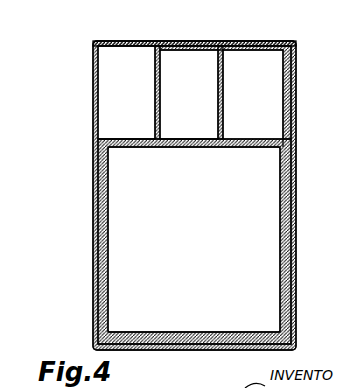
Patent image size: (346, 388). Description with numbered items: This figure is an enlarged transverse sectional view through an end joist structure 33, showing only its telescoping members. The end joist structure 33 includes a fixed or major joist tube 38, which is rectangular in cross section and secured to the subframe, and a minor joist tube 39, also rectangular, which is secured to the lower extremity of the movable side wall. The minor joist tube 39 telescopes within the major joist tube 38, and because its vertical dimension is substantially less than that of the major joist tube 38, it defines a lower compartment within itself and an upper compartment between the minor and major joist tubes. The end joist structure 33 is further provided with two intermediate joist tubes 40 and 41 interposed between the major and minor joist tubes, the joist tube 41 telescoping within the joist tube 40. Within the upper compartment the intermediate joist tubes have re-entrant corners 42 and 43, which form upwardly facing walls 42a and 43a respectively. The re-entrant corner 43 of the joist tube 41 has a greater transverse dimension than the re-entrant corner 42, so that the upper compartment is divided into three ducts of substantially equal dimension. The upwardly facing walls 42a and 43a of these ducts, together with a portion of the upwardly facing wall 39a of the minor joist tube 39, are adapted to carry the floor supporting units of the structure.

The end joist structure 33 is at (92, 193).
The major joist tube 38 is at (147, 29).
The minor joist tube 39 is at (240, 148).
The upwardly facing wall 39a is at (256, 129).
The intermediate joist tube 40 is at (194, 50).
The intermediate joist tube 41 is at (268, 50).
The re-entrant corner 42 is at (129, 92).
The upwardly facing wall 42a is at (143, 139).
The re-entrant corner 43 is at (191, 92).
The upwardly facing wall 43a is at (203, 139).